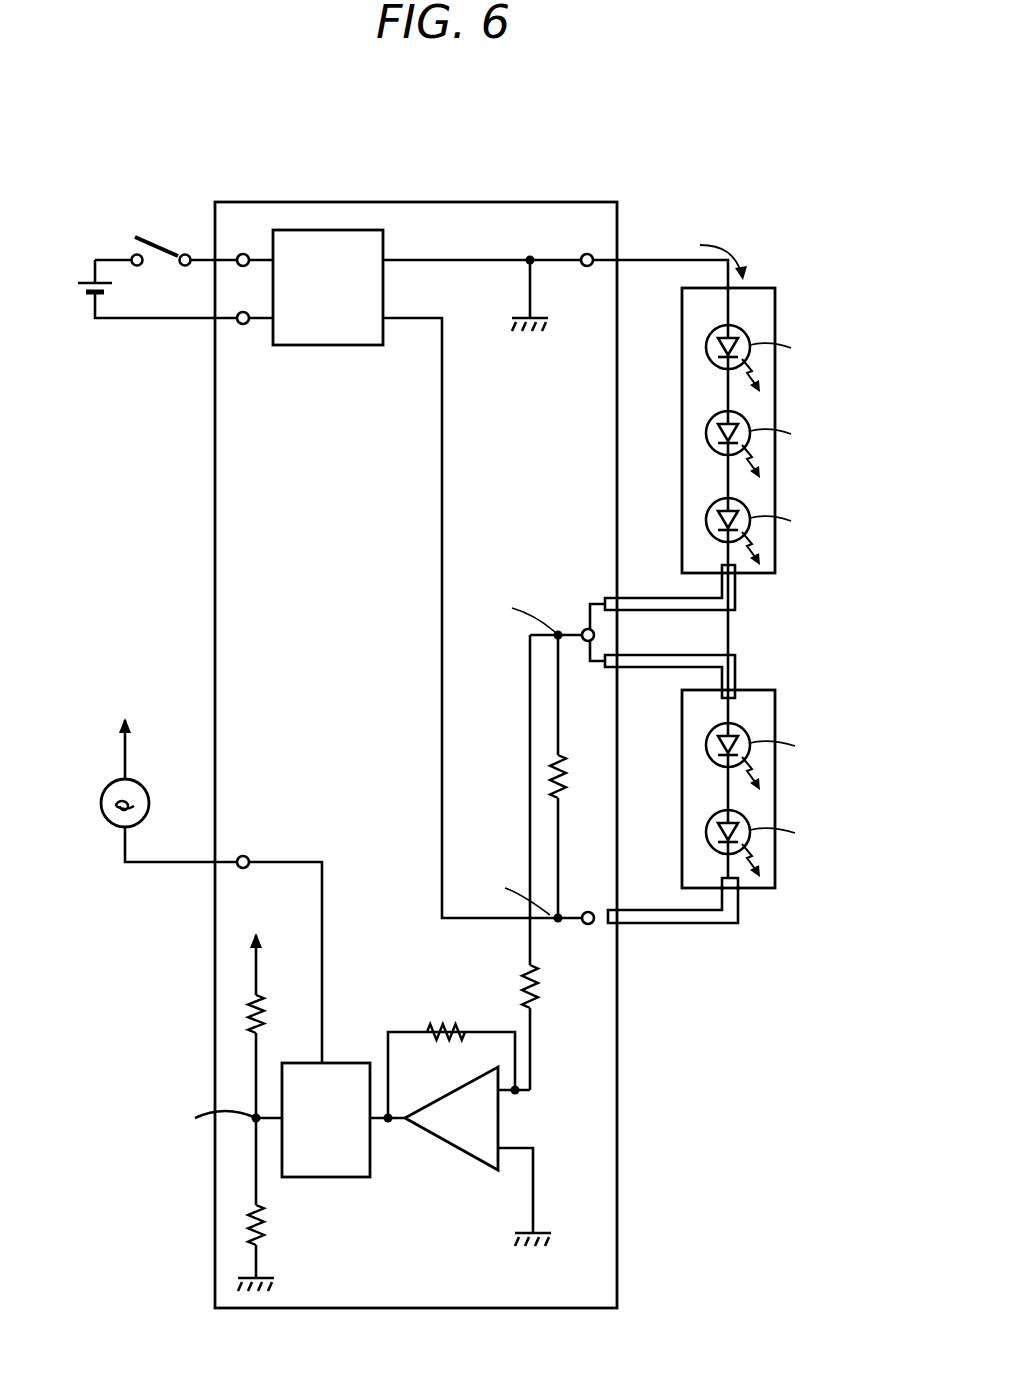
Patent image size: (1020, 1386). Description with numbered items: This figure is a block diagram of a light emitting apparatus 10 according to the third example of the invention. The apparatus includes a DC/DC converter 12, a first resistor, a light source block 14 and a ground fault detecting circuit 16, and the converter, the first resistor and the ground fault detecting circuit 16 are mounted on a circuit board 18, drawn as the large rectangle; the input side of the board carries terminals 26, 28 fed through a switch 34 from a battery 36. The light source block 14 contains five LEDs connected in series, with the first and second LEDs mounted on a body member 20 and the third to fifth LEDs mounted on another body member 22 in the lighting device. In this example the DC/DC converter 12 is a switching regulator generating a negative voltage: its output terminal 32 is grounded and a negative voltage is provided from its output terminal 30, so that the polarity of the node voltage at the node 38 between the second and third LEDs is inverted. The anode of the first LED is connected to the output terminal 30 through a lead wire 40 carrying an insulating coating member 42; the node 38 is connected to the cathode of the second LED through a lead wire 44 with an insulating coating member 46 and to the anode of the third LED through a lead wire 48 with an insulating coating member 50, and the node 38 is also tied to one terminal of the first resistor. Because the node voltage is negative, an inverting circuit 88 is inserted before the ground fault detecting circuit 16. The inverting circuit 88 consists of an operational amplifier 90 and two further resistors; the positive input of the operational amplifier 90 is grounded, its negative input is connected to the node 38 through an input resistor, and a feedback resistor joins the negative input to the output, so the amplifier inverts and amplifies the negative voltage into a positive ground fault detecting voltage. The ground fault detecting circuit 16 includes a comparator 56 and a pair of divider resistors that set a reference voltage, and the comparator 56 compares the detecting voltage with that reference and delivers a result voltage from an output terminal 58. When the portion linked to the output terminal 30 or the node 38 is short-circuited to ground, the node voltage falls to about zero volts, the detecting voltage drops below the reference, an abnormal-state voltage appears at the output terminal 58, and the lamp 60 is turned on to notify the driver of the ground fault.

The light emitting apparatus 10 is at (424, 164).
The DC/DC converter 12 is at (333, 347).
The light source block 14 is at (783, 266).
The ground fault detecting circuit 16 is at (347, 1195).
The circuit board 18 is at (520, 201).
The body member 20 is at (775, 711).
The body member 22 is at (775, 312).
The input terminal 26 is at (243, 254).
The input terminal 28 is at (243, 324).
The output terminal 30 is at (588, 911).
The output terminal 32 is at (587, 267).
The switch 34 is at (152, 242).
The battery 36 is at (108, 290).
The node 38 is at (584, 629).
The lead wire 40 is at (655, 910).
The coating member 42 is at (672, 925).
The lead wire 44 is at (652, 668).
The coating member 46 is at (745, 664).
The lead wire 48 is at (655, 600).
The coating member 50 is at (740, 603).
The comparator 56 is at (352, 1060).
The output terminal 58 is at (243, 855).
The lamp 60 is at (150, 789).
The inverting circuit 88 is at (465, 1218).
The operational amplifier 90 is at (450, 1146).